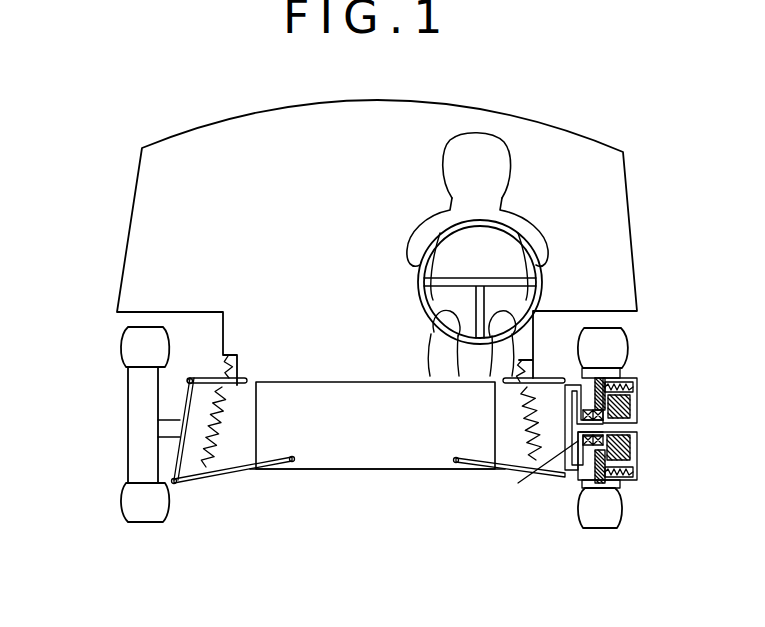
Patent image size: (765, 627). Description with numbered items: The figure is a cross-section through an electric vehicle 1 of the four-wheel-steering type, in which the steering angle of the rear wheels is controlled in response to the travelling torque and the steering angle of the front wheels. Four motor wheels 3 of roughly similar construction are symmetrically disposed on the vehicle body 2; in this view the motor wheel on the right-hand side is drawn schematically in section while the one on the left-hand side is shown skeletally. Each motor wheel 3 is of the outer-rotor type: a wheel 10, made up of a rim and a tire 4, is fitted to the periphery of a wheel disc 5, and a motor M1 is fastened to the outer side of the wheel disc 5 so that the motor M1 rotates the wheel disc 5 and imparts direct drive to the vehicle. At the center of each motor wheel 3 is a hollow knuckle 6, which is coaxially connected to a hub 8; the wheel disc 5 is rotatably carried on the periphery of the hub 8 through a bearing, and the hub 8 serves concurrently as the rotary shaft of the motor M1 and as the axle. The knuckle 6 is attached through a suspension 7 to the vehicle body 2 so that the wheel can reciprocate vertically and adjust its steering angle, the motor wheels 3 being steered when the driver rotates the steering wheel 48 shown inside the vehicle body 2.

The electric vehicle 1 is at (72, 171).
The vehicle body 2 is at (123, 262).
The motor wheel 3 is at (115, 525).
The tire 4 is at (617, 350).
The wheel disc 5 is at (593, 470).
The knuckle 6 is at (545, 477).
The suspension 7 is at (217, 487).
The hub 8 is at (567, 425).
The wheel 10 is at (634, 331).
The steering wheel 48 is at (540, 271).
The motor M1 is at (627, 450).